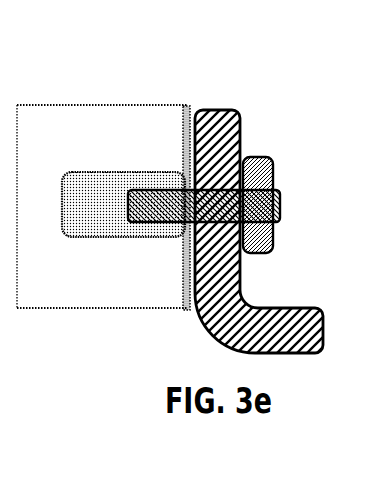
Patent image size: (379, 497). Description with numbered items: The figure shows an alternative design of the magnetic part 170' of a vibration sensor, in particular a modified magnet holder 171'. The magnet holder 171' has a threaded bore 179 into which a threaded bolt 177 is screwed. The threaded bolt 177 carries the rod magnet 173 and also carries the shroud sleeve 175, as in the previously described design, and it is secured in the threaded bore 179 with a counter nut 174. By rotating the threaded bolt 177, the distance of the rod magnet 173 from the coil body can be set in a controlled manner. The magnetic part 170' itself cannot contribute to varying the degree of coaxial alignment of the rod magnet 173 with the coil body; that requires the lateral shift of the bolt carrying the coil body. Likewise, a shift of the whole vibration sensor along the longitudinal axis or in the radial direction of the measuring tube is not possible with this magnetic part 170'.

The magnetic part 170' is at (102, 162).
The magnet holder 171' is at (285, 231).
The rod magnet 173 is at (97, 238).
The counter nut 174 is at (270, 162).
The shroud sleeve 175 is at (172, 106).
The threaded bolt 177 is at (280, 194).
The threaded bore 179 is at (243, 155).